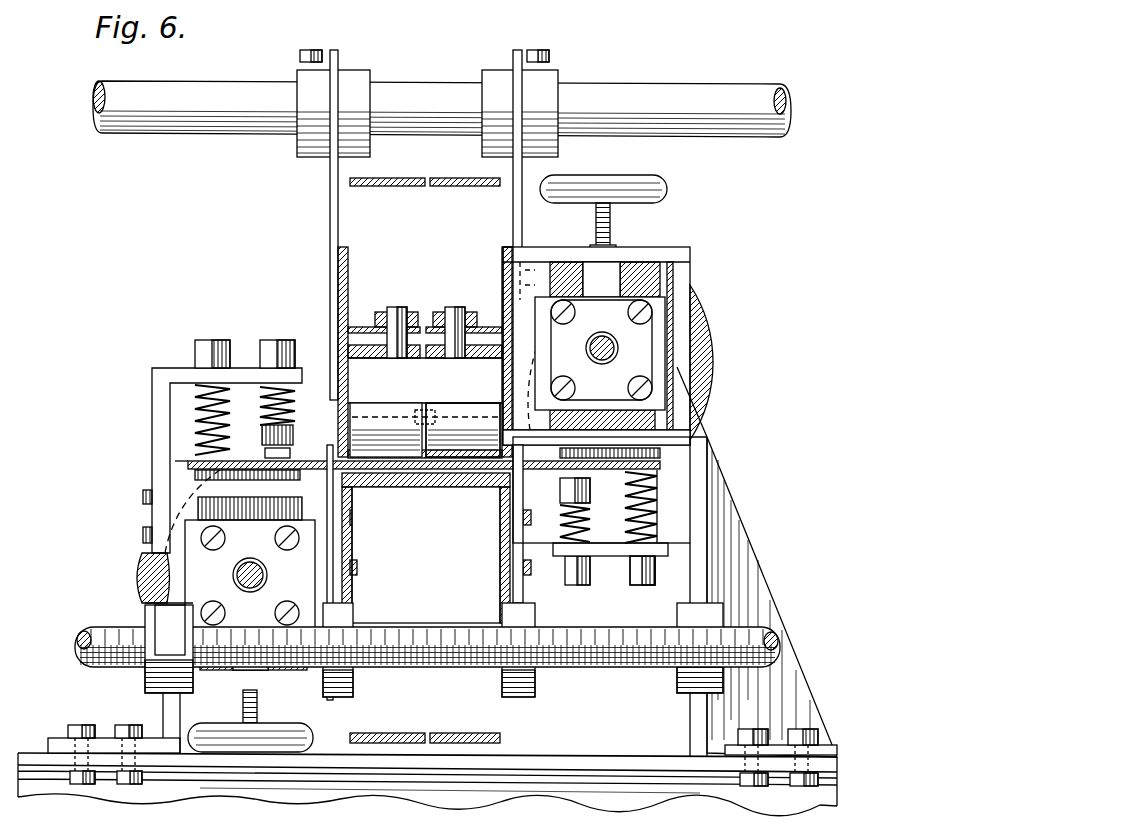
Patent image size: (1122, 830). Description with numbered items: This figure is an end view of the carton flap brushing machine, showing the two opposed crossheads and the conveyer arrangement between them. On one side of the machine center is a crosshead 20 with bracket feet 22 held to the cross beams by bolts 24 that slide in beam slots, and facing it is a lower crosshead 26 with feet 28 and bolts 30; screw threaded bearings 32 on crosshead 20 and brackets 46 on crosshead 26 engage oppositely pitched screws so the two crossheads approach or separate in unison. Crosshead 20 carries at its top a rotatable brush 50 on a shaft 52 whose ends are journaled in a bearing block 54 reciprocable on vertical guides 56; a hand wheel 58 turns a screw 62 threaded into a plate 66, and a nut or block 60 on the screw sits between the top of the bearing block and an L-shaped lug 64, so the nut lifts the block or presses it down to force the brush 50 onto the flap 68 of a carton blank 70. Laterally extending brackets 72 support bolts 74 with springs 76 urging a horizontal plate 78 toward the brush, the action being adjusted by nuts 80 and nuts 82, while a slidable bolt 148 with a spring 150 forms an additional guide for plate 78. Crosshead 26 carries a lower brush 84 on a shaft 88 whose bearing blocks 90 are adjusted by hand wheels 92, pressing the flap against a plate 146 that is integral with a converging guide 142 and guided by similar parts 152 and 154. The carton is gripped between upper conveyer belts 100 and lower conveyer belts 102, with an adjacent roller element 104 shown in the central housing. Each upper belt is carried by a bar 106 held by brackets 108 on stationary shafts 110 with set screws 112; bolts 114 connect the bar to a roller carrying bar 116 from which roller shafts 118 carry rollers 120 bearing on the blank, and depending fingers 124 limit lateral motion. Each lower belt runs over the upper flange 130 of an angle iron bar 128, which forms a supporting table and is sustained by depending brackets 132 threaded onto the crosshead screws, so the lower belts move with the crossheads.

The crosshead 20 is at (700, 535).
The bracket feet 22 is at (740, 740).
The bolts 24 is at (795, 787).
The crosshead 26 is at (172, 568).
The feet 28 is at (62, 740).
The bolts 30 is at (122, 785).
The screw threaded bearings 32 is at (715, 615).
The brackets 46 is at (170, 640).
The brush 50 is at (712, 345).
The shaft 52 is at (602, 335).
The bearing block 54 is at (640, 392).
The vertical guides 56 is at (675, 262).
The hand wheel 58 is at (632, 177).
The nut or block 60 is at (640, 262).
The screw 62 is at (612, 220).
The L-shaped lug 64 is at (590, 268).
The plate 66 is at (616, 246).
The flap 68 is at (560, 490).
The carton blank 70 is at (312, 461).
The brackets 72 is at (185, 368).
The bolts 74 is at (523, 567).
The springs 76 is at (296, 392).
The horizontal plate 78 is at (625, 478).
The nuts 80 is at (510, 545).
The nuts 82 is at (265, 355).
The brush 84 is at (150, 575).
The shaft 88 is at (250, 560).
The bearing blocks 90 is at (290, 560).
The hand wheels 92 is at (305, 735).
The upper conveyer belts 100 is at (400, 178).
The lower conveyer belts 102 is at (410, 735).
The roller 104 is at (386, 430).
The bar 106 is at (500, 252).
The brackets 108 is at (330, 186).
The shafts 110 is at (678, 97).
The set screws 112 is at (318, 50).
The bolts 114 is at (452, 307).
The roller carrying bar 116 is at (348, 372).
The roller shafts 118 is at (340, 410).
The roller 120 is at (455, 405).
The depending fingers 124 is at (560, 340).
The angle iron bar 128 is at (352, 496).
The upper flange 130 is at (470, 465).
The depending brackets 132 is at (330, 600).
The converging guide 142 is at (429, 472).
The plate 146 is at (200, 410).
The slidable bolt 148 is at (642, 585).
The spring 150 is at (673, 506).
The slidable bolt 152 is at (212, 340).
The spring 154 is at (190, 440).